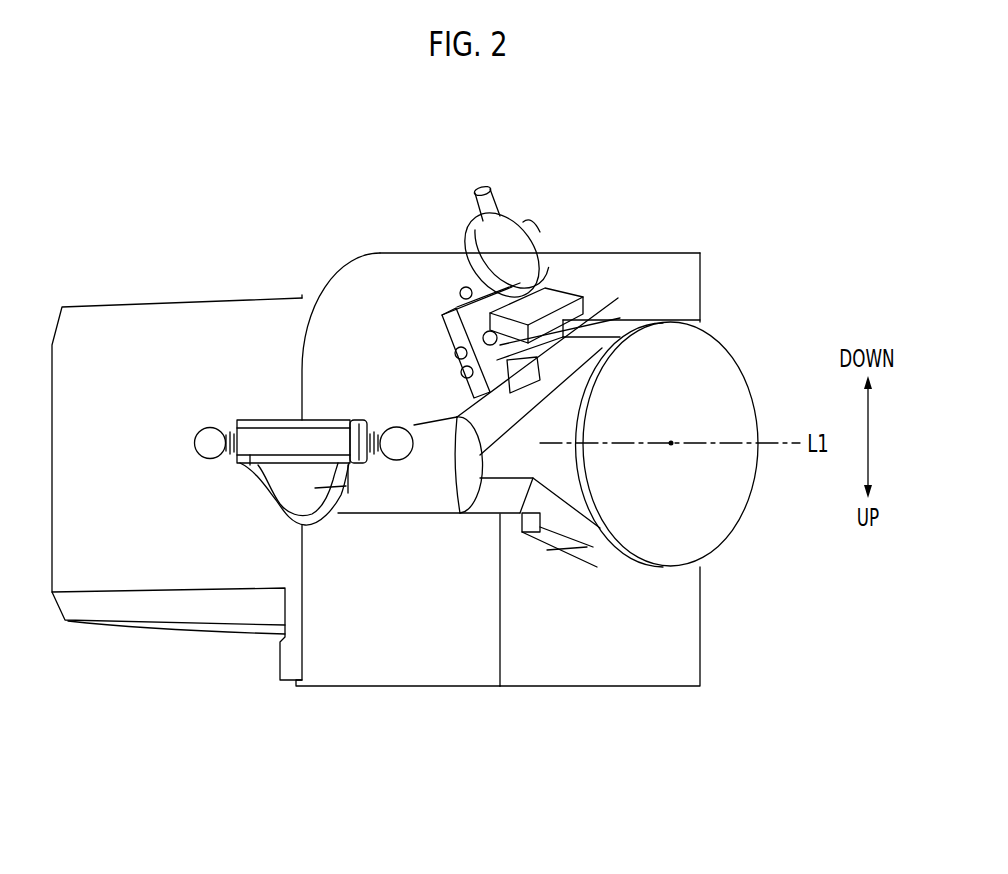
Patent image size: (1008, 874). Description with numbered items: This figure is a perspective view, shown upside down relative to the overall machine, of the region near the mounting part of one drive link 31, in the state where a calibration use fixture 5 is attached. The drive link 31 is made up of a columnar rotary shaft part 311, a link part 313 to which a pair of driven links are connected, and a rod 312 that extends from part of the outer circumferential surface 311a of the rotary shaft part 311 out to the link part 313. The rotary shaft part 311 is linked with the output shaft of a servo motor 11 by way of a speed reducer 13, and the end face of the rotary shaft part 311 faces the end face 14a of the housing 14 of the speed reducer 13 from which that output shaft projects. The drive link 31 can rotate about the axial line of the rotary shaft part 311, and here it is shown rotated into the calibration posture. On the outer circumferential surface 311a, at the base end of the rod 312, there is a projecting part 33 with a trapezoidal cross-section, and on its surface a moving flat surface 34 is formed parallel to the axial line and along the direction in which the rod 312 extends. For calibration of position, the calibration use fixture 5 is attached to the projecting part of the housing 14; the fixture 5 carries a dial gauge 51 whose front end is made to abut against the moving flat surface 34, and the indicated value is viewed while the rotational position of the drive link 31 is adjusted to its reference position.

The calibration use fixture 5 is at (514, 203).
The dial gauge 51 is at (518, 228).
The servo motor 11 is at (257, 293).
The speed reducer 13 is at (395, 245).
The housing 14 is at (402, 670).
The end face of the housing 14a is at (680, 655).
The drive link 31 is at (390, 528).
The rotary shaft part 311 is at (723, 342).
The outer circumferential surface 311a is at (630, 327).
The rod 312 is at (447, 505).
The link part 313 is at (253, 420).
The projecting part 33 is at (580, 335).
The moving flat surface 34 is at (557, 322).